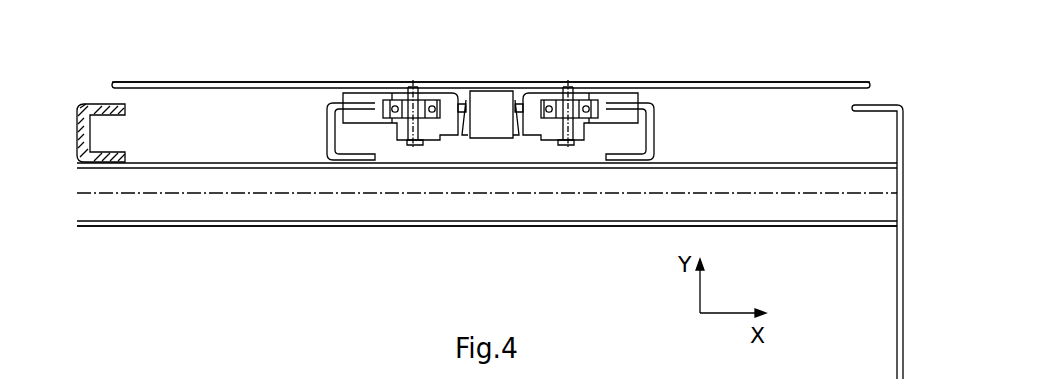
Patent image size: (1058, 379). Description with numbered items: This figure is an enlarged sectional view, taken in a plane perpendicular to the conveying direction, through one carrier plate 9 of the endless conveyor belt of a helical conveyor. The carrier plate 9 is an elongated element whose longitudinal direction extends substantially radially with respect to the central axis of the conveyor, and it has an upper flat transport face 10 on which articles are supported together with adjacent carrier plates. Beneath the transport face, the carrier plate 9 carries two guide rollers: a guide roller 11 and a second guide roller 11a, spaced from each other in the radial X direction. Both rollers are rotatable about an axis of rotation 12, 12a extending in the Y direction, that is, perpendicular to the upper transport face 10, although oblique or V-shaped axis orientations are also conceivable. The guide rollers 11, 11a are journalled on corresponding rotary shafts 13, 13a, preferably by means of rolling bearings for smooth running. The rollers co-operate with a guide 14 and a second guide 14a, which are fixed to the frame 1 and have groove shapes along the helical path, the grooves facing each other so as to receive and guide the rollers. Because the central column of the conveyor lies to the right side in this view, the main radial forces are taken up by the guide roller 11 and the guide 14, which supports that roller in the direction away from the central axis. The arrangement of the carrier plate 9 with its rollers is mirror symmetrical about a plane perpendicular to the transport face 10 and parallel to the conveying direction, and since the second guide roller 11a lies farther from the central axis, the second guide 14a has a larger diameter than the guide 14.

The frame 1 is at (288, 230).
The carrier plate 9 is at (211, 76).
The upper flat transport face 10 is at (265, 86).
The guide roller 11 is at (545, 98).
The second guide roller 11a is at (400, 100).
The axis of rotation 12 is at (572, 85).
The axis of rotation 12a is at (415, 85).
The rotary shaft 13 is at (566, 92).
The rotary shaft 13a is at (420, 95).
The guide 14 is at (605, 98).
The second guide 14a is at (378, 99).